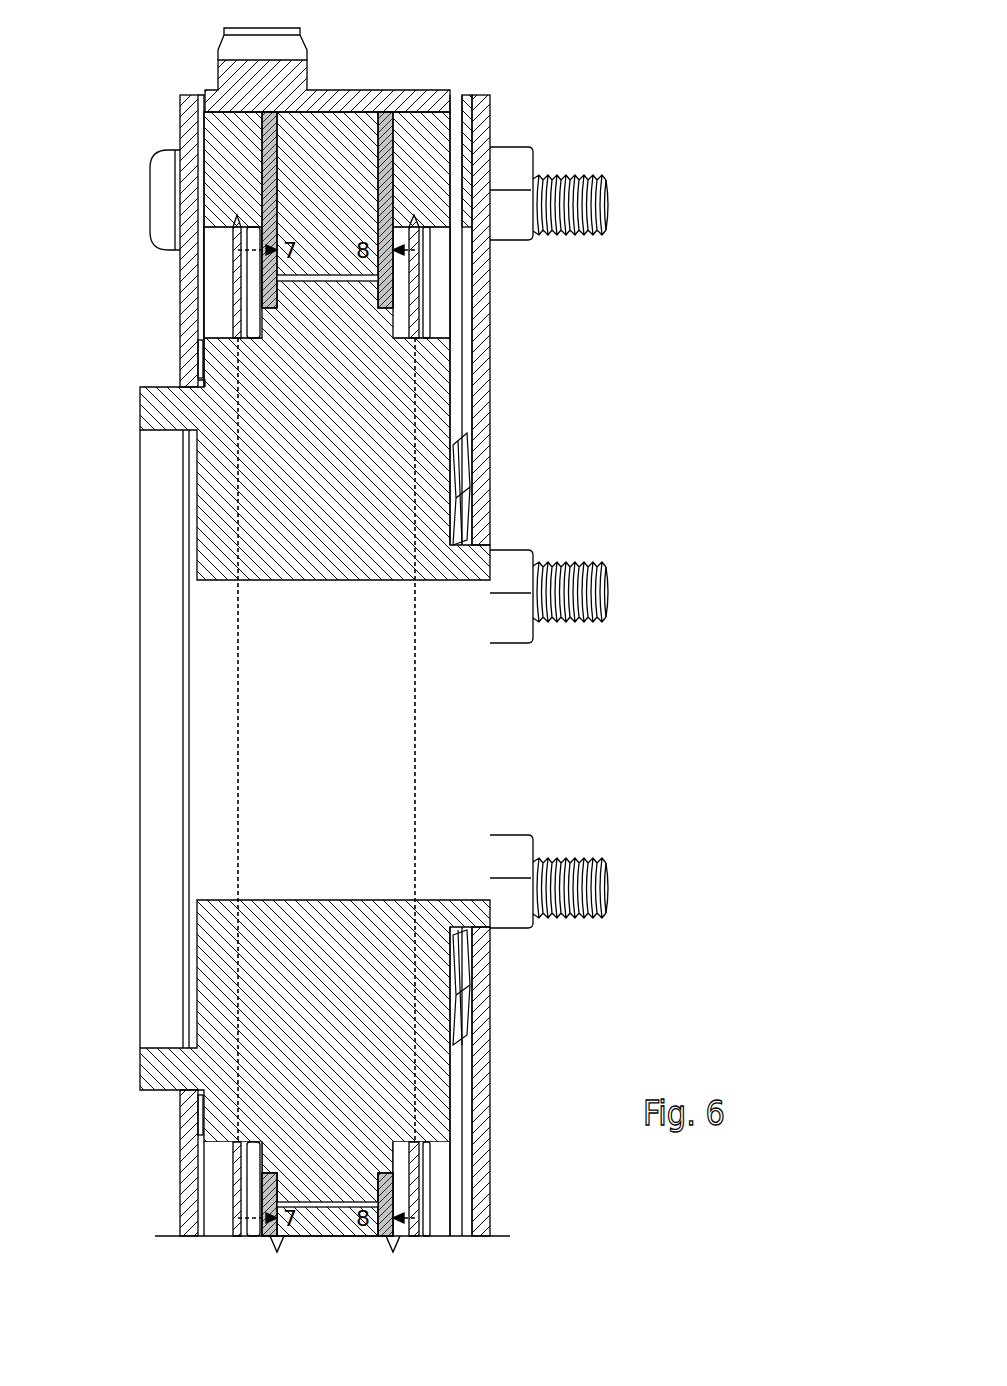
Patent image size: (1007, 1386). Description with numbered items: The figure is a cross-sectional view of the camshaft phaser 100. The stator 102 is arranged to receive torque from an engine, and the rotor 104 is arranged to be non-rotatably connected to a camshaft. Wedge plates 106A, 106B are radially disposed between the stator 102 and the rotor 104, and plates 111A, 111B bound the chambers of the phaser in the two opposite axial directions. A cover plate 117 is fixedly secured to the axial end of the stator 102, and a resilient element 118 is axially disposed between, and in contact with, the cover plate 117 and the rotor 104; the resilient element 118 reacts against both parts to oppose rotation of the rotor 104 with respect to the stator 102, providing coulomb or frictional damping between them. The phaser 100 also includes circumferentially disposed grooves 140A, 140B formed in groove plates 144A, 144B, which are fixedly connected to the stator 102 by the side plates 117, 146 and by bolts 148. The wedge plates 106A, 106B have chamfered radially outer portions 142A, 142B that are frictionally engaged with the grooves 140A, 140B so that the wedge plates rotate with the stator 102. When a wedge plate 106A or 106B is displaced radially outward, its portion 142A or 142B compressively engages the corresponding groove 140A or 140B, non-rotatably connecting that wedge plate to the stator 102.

The camshaft phaser 100 is at (735, 96).
The stator 102 is at (352, 90).
The rotor 104 is at (420, 380).
The wedge plate 106A is at (233, 318).
The wedge plate 106B is at (420, 318).
The plate 111A is at (235, 280).
The plate 111B is at (420, 282).
The cover plate 117 is at (192, 93).
The resilient element 118 is at (200, 355).
The groove 140A is at (233, 215).
The groove 140B is at (416, 205).
The chamfered radially outer portion 142A is at (247, 228).
The chamfered radially outer portion 142B is at (440, 225).
The groove plate 144A is at (225, 152).
The groove plate 144B is at (420, 135).
The side plate 146 is at (484, 95).
The bolt 148 is at (150, 190).